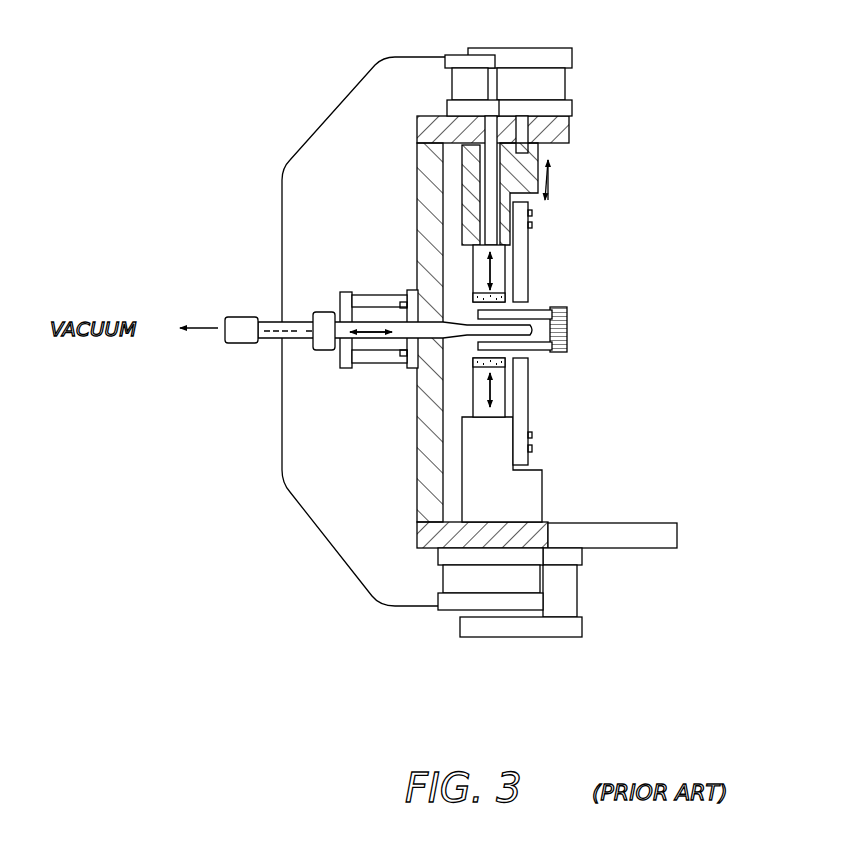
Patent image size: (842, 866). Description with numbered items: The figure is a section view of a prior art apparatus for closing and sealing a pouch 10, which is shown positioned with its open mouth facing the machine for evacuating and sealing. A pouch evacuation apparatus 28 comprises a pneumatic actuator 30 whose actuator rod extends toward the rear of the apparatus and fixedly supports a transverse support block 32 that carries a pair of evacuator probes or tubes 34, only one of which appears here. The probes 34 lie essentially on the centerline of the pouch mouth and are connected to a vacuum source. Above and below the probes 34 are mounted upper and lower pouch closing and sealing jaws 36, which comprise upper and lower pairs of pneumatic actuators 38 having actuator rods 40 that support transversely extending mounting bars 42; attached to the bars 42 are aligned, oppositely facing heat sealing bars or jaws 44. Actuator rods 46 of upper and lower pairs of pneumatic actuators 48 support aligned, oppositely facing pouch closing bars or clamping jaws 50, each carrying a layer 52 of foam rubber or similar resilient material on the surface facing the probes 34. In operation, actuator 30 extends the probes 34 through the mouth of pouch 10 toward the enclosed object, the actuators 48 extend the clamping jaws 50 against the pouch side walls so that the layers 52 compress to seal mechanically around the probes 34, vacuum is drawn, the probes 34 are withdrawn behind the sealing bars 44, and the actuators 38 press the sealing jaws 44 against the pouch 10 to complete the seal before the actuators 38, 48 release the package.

The pouch 10 is at (543, 305).
The pouch evacuation apparatus 28 is at (346, 260).
The pneumatic actuator 30 is at (366, 355).
The transverse support block 32 is at (320, 350).
The evacuator probe 34 is at (241, 343).
The pouch closing and sealing jaws 36 is at (560, 438).
The pneumatic actuator 38 is at (545, 58).
The actuator rod 40 is at (523, 128).
The mounting bar 42 is at (538, 150).
The heat sealing bar 44 is at (520, 257).
The actuator rod 46 is at (490, 207).
The pneumatic actuator 48 is at (466, 80).
The clamping jaw 50 is at (480, 257).
The resilient layer 52 is at (475, 295).